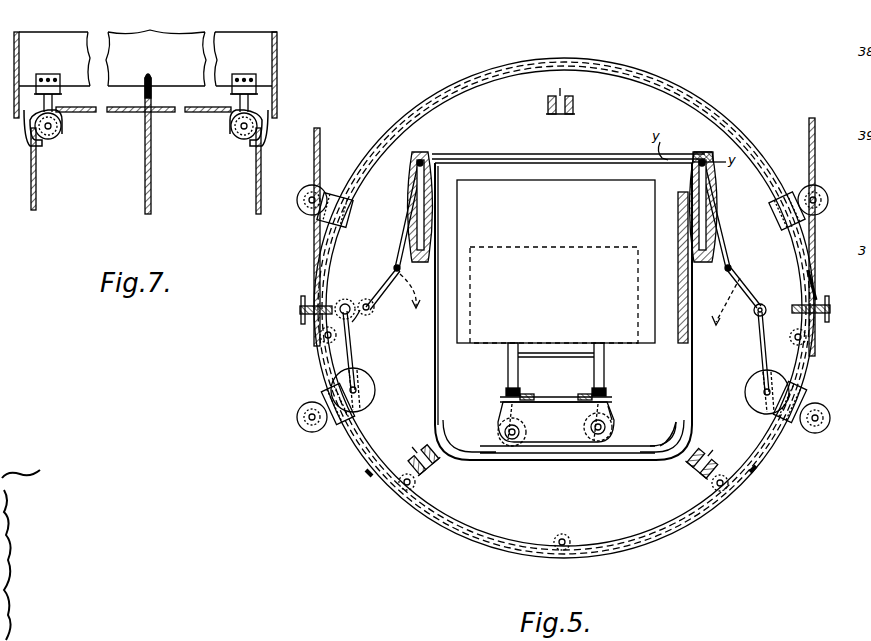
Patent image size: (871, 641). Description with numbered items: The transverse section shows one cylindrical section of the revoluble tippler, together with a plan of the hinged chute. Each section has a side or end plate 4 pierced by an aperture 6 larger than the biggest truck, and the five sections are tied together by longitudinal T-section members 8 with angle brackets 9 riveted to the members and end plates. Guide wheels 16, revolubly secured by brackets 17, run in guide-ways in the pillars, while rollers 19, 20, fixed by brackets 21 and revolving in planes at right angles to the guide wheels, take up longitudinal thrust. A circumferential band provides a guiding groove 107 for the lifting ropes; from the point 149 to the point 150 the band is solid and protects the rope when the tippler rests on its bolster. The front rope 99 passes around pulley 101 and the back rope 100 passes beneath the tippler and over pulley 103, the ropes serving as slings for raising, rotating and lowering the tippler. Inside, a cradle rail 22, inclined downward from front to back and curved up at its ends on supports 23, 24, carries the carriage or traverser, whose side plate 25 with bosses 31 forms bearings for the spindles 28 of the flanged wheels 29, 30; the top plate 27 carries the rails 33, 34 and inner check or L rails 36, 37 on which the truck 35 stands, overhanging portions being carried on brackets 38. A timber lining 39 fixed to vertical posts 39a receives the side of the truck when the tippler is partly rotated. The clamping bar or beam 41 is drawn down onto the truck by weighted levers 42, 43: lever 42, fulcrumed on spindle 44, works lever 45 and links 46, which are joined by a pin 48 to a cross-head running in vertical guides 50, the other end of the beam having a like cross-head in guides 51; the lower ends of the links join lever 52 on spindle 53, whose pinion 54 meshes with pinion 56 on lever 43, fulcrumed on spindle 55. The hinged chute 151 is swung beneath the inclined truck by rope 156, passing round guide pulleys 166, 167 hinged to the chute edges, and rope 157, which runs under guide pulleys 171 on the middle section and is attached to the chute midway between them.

In FIG. 7, the hinged chute 151 is at (88, 40).
In FIG. 7, the rope 156 is at (130, 108).
In FIG. 7, the rope 157 is at (151, 163).
In FIG. 7, the guide pulley 166 is at (58, 130).
In FIG. 7, the guide pulley 167 is at (232, 128).
In FIG. 5, the guiding groove 107 is at (666, 72).
In FIG. 5, the point 150 is at (368, 472).
In FIG. 5, the point 149 is at (756, 475).
In FIG. 5, the back rope 100 is at (320, 142).
In FIG. 5, the front rope 99 is at (808, 134).
In FIG. 5, the guide wheels 16 is at (316, 204).
In FIG. 5, the brackets 17 is at (356, 210).
In FIG. 5, the roller 19 is at (300, 304).
In FIG. 5, the roller 20 is at (830, 302).
In FIG. 5, the brackets 21 is at (300, 312).
In FIG. 5, the pulley 101 is at (816, 282).
In FIG. 5, the pulley 103 is at (806, 337).
In FIG. 5, the pinion 56 is at (342, 304).
In FIG. 5, the pinion 54 is at (372, 312).
In FIG. 5, the spindle 55 is at (354, 322).
In FIG. 5, the spindle 53 is at (366, 300).
In FIG. 5, the lever 52 is at (392, 264).
In FIG. 5, the weighted lever 43 is at (356, 350).
In FIG. 5, the weighted lever 42 is at (758, 333).
In FIG. 5, the spindle 44 is at (764, 306).
In FIG. 5, the lever 45 is at (748, 286).
In FIG. 5, the link 46 is at (724, 241).
In FIG. 5, the vertical guides 51 is at (428, 205).
In FIG. 5, the vertical guides 50 is at (712, 190).
In FIG. 5, the pin 48 is at (714, 166).
In FIG. 5, the apertures 6 is at (456, 152).
In FIG. 5, the bar or beam 41 is at (489, 160).
In FIG. 5, the truck 35 is at (545, 182).
In FIG. 5, the timber lining 39 is at (678, 220).
In FIG. 5, the vertical beams or posts 39a is at (678, 280).
In FIG. 5, the check or L rail 37 is at (516, 350).
In FIG. 5, the check or L rail 36 is at (598, 348).
In FIG. 5, the top plate 27 is at (555, 397).
In FIG. 5, the rail 34 is at (506, 388).
In FIG. 5, the rail 33 is at (606, 388).
In FIG. 5, the brackets 38 is at (520, 400).
In FIG. 5, the side plate 25 is at (556, 422).
In FIG. 5, the wheel 30 is at (505, 410).
In FIG. 5, the bosses 31 is at (520, 433).
In FIG. 5, the spindles 28 is at (592, 426).
In FIG. 5, the wheel 29 is at (612, 418).
In FIG. 5, the support 24 is at (463, 426).
In FIG. 5, the rail 22 is at (506, 450).
In FIG. 5, the support 23 is at (666, 412).
In FIG. 5, the longitudinal members or ties 8 is at (706, 448).
In FIG. 5, the angle brackets 9 is at (548, 102).
In FIG. 5, the side or end plate 4 is at (562, 310).
In FIG. 5, the guide pulleys 171 is at (320, 338).